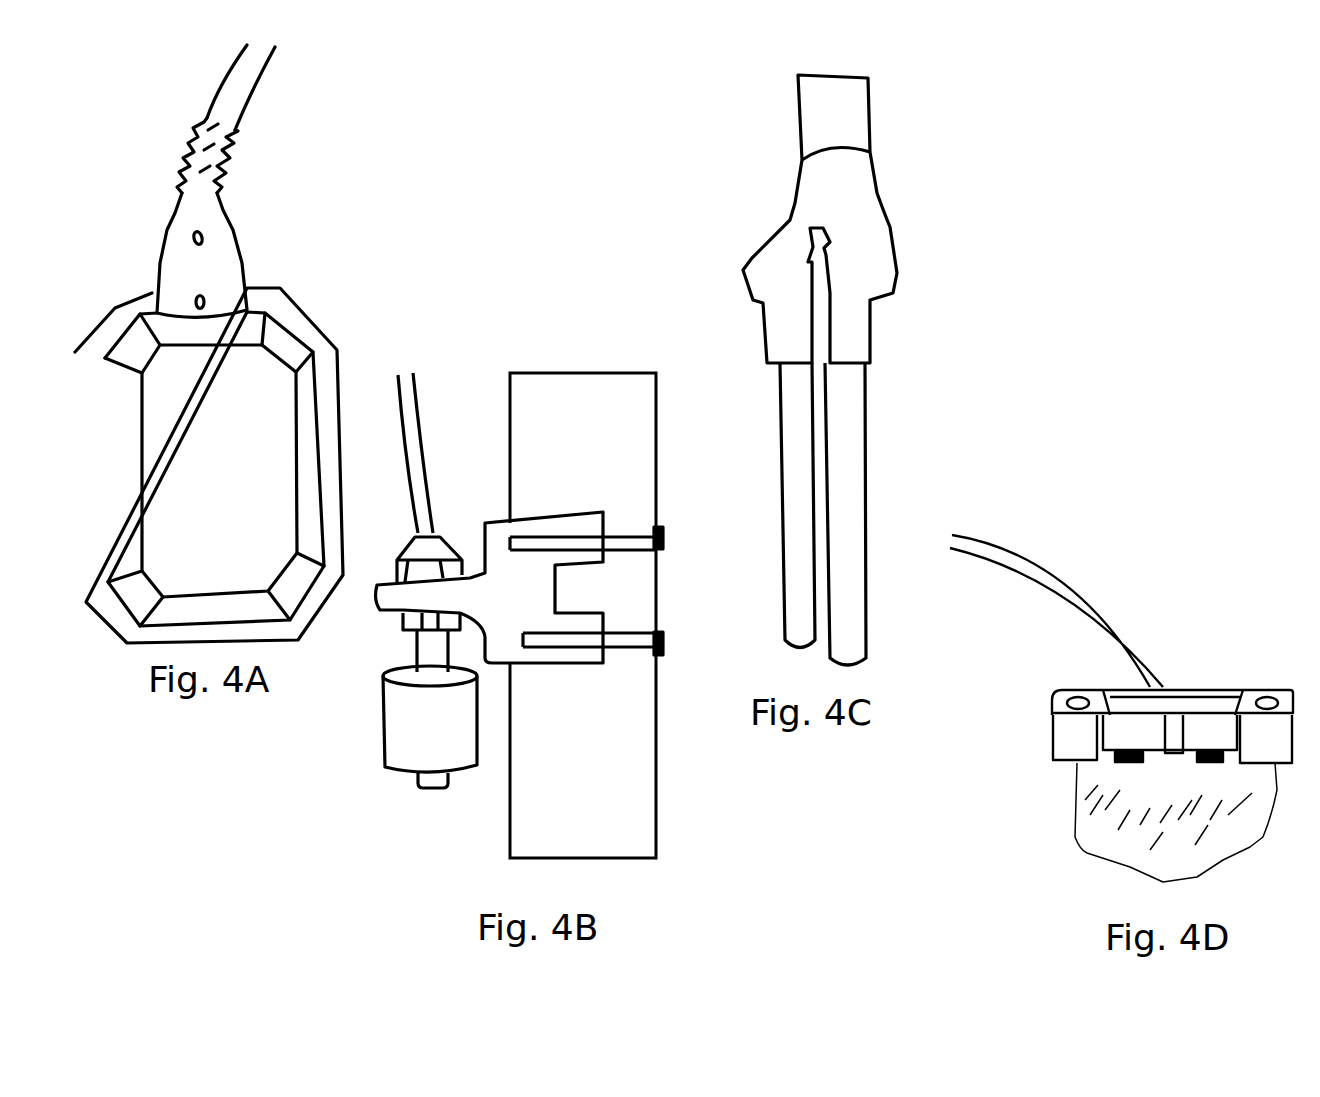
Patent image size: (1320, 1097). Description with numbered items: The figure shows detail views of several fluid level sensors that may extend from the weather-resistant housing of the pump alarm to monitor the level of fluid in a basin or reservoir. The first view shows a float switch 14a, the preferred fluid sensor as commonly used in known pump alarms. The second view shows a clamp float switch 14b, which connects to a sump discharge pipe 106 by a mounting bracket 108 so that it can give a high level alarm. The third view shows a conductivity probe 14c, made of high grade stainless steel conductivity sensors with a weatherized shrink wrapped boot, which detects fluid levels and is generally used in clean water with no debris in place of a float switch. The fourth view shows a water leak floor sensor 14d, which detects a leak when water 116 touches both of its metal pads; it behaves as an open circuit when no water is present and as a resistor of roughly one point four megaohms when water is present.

In FIG. 4A, the float switch 14a is at (313, 277).
In FIG. 4B, the clamp float switch 14b is at (425, 738).
In FIG. 4C, the conductivity probe 14c is at (910, 160).
In FIG. 4D, the water leak floor sensor 14d is at (1202, 647).
In FIG. 4B, the sump discharge pipe 106 is at (613, 805).
In FIG. 4B, the mounting bracket 108 is at (520, 597).
In FIG. 4D, the water 116 is at (1105, 823).